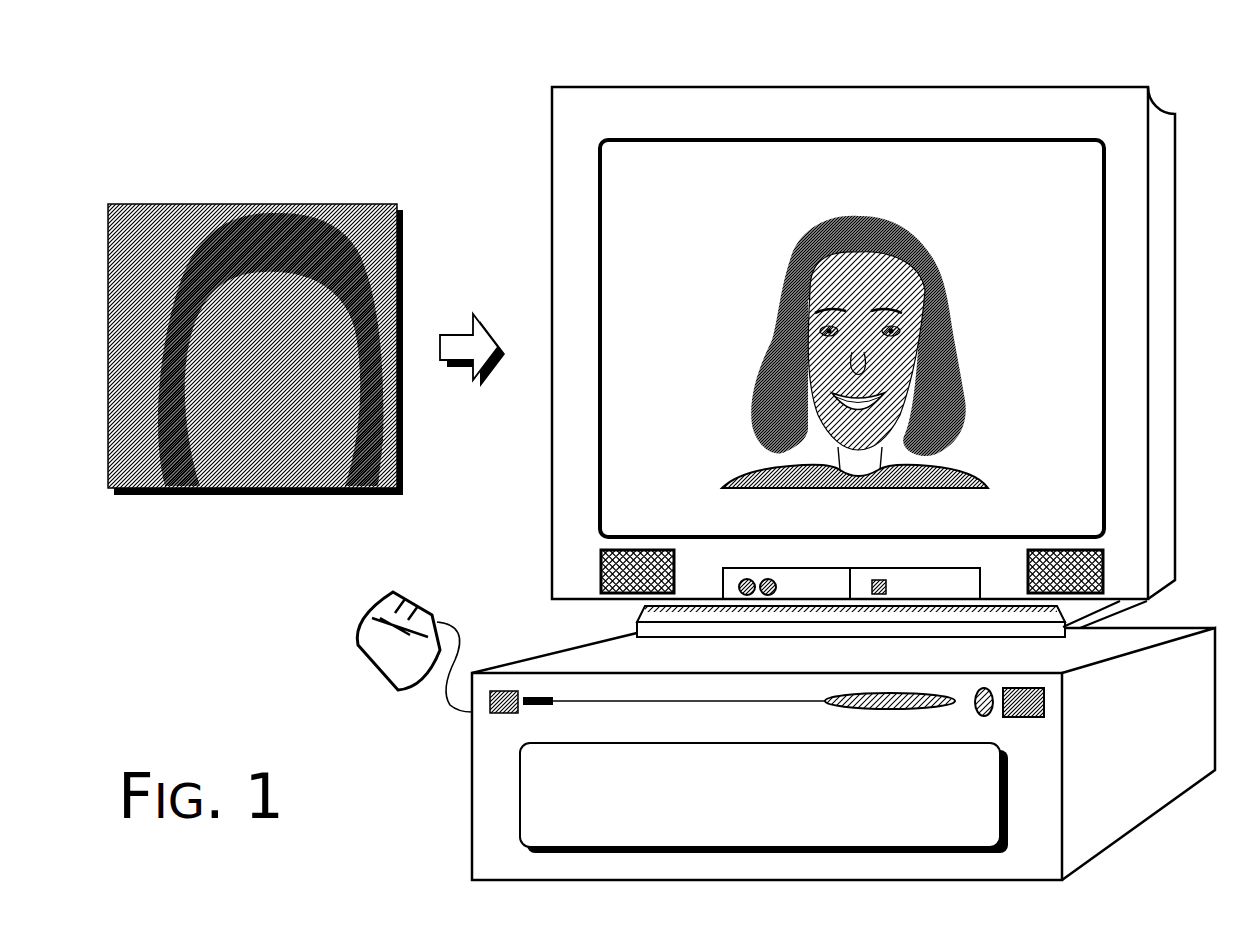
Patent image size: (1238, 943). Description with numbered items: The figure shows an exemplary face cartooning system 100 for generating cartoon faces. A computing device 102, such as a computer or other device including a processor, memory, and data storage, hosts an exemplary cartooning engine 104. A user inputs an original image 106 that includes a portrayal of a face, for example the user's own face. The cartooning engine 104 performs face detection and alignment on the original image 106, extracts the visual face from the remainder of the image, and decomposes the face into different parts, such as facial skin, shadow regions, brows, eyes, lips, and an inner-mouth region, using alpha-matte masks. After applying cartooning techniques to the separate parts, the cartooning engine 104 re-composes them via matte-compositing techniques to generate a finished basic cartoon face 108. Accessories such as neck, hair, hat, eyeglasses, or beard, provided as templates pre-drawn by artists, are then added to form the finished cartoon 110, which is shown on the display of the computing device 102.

The face cartooning system 100 is at (215, 51).
The computing device 102 is at (786, 483).
The cartooning engine 104 is at (878, 781).
The original image 106 is at (346, 203).
The basic cartoon face 108 is at (878, 276).
The finished cartoon 110 is at (994, 266).